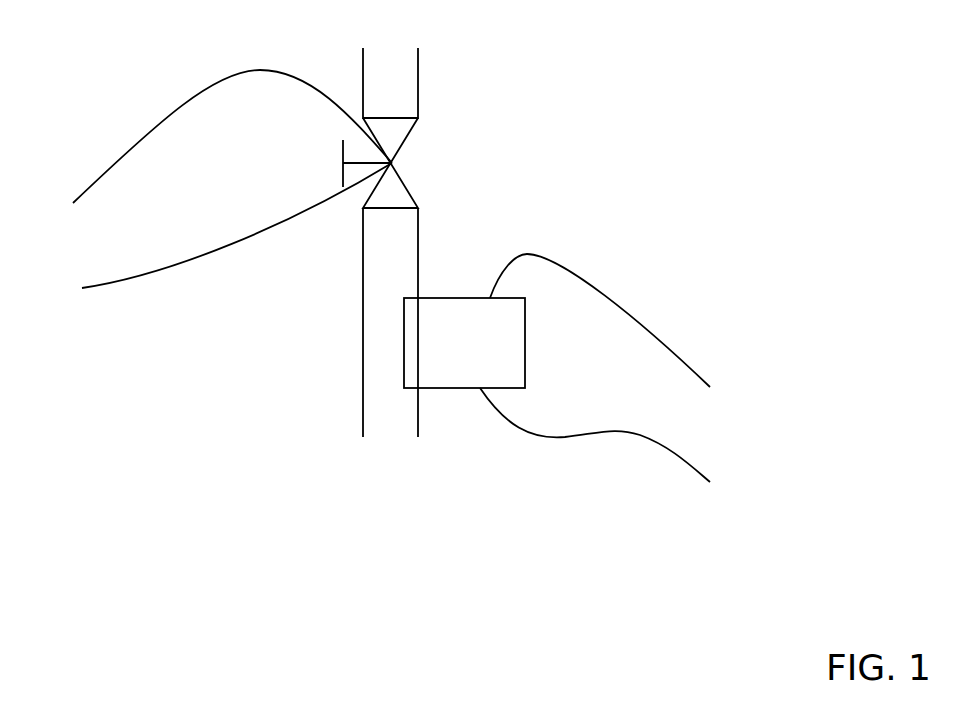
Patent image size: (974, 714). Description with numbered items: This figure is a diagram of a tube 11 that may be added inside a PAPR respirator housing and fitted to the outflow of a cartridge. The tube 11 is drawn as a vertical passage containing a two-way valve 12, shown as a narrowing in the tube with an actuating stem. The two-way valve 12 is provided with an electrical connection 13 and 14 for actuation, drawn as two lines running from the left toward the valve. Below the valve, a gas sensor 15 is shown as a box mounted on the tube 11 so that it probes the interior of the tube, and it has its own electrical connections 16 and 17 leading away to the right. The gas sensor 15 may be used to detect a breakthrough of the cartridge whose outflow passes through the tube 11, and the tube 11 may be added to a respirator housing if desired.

The tube 11 is at (564, 66).
The two-way valve 12 is at (336, 158).
The electrical connection 13 is at (195, 93).
The electrical connection 14 is at (198, 258).
The gas sensor 15 is at (529, 343).
The electrical connection 16 is at (593, 287).
The electrical connection 17 is at (658, 448).